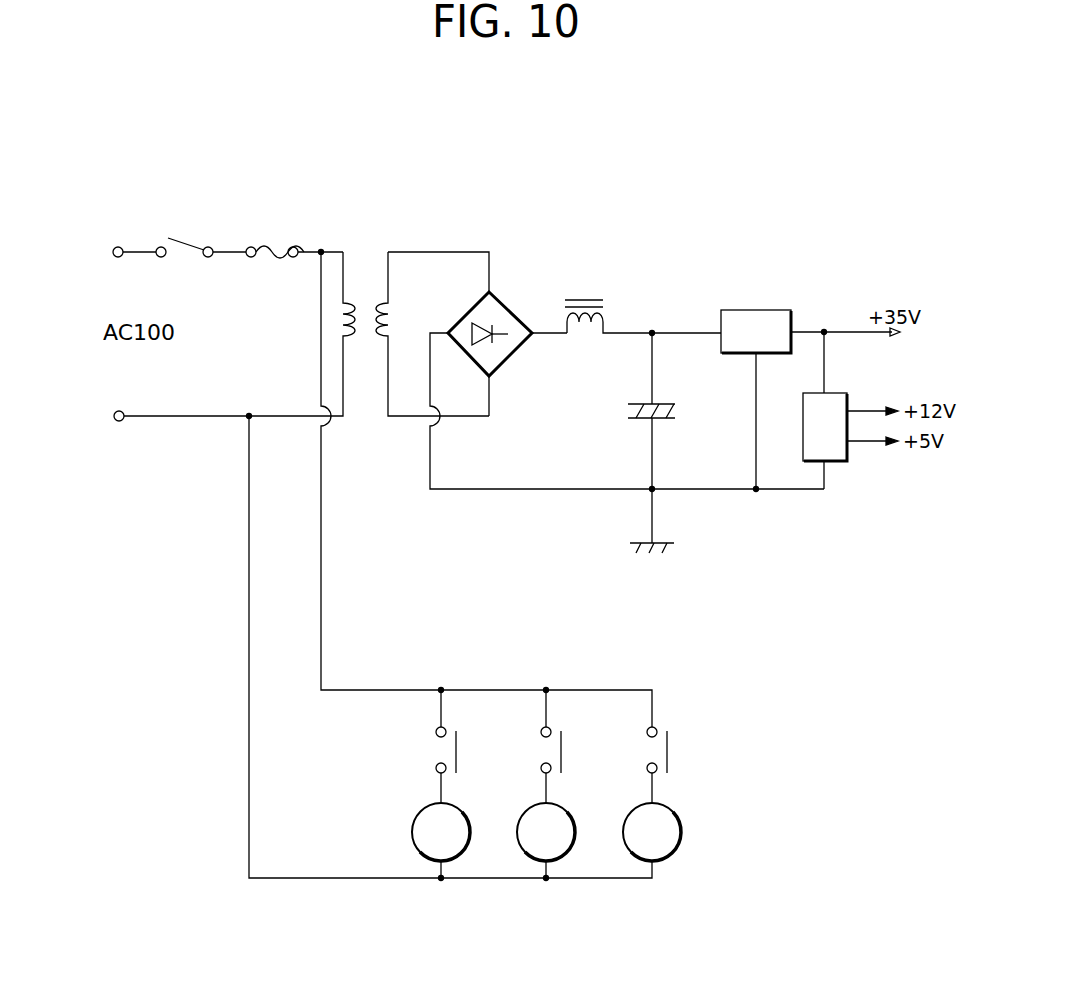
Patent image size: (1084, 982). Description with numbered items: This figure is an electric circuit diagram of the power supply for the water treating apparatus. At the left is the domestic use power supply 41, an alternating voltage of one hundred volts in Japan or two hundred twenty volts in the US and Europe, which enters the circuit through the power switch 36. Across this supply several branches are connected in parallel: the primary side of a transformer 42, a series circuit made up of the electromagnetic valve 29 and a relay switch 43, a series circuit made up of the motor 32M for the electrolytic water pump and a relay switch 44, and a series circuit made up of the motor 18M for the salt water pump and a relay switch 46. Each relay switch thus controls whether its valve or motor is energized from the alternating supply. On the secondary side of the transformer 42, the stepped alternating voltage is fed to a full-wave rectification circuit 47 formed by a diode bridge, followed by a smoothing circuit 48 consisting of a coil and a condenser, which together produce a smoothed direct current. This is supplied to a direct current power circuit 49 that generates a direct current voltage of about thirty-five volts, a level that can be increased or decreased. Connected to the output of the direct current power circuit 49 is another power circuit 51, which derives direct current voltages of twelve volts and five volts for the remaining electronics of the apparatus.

The domestic use power supply 41 is at (118, 247).
The power switch 36 is at (191, 246).
The transformer 42 is at (363, 302).
The full-wave rectification circuit 47 is at (508, 305).
The smoothing circuit 48 is at (619, 326).
The direct current power circuit 49 is at (757, 309).
The power circuit 51 is at (834, 463).
The relay switch 43 is at (436, 750).
The relay switch 44 is at (541, 750).
The relay switch 46 is at (646, 750).
The electromagnetic valve 29 is at (411, 832).
The motor for the electrolytic water pump 32M is at (567, 855).
The motor for the salt water pump 18M is at (683, 830).